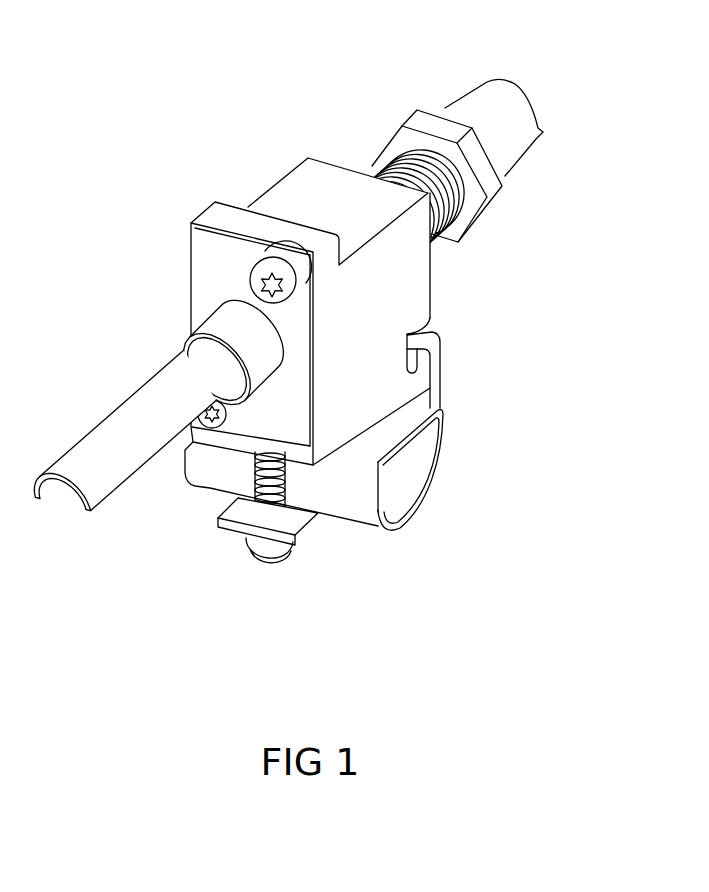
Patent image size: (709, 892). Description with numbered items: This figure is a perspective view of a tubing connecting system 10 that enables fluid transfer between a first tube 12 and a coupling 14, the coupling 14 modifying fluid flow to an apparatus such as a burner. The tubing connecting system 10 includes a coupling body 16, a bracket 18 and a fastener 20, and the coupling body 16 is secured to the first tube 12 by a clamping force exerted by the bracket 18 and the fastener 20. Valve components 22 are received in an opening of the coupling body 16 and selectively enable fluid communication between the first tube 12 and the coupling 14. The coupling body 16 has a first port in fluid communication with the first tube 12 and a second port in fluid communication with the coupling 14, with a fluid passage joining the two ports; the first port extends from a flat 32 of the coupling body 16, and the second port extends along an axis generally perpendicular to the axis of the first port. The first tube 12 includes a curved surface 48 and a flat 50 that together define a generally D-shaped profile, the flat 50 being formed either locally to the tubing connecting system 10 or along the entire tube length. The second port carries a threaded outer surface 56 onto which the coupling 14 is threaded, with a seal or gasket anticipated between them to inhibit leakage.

The tubing connecting system 10 is at (497, 306).
The first tube 12 is at (381, 530).
The coupling 14 is at (506, 174).
The coupling body 16 is at (270, 187).
The bracket 18 is at (330, 525).
The fastener 20 is at (262, 558).
The valve components 22 is at (185, 299).
The flat 32 is at (371, 432).
The curved surface 48 is at (425, 515).
The flat 50 is at (418, 405).
The threaded outer surface 56 is at (390, 172).